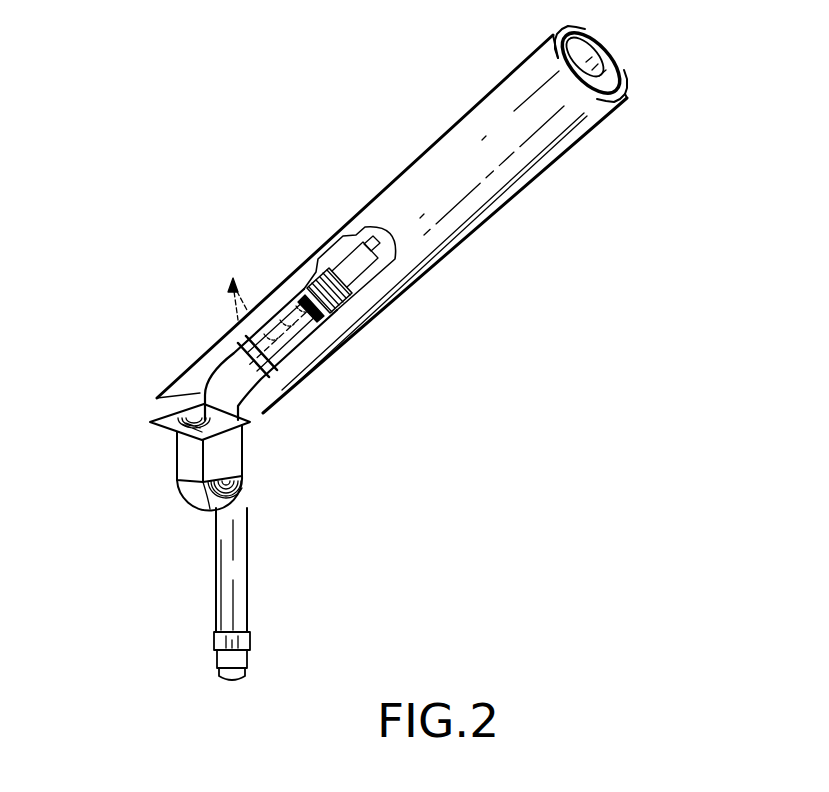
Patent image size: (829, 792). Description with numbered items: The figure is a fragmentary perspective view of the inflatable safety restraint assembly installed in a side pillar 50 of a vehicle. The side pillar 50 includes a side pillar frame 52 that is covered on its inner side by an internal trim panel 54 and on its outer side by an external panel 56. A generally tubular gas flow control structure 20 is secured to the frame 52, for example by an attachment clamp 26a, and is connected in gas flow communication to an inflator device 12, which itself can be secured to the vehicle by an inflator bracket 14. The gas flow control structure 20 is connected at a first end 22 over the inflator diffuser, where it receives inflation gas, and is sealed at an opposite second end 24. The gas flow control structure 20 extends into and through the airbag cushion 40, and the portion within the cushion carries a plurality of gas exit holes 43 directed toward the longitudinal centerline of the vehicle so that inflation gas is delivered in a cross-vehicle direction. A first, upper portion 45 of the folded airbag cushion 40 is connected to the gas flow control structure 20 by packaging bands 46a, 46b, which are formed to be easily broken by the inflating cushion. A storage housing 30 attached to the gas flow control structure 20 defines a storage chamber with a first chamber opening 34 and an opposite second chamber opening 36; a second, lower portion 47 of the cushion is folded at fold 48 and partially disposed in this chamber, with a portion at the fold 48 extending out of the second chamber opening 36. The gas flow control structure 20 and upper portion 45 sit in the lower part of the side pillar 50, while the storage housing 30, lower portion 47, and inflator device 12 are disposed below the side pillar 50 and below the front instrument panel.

The inflator device 12 is at (248, 598).
The inflator bracket 14 is at (250, 638).
The gas flow control structure 20 is at (345, 236).
The first end 22 is at (244, 497).
The second end 24 is at (373, 252).
The attachment clamp 26a is at (313, 262).
The storage housing 30 is at (244, 450).
The first chamber opening 34 is at (183, 398).
The second chamber opening 36 is at (244, 476).
The airbag cushion 40 is at (197, 489).
The gas exit holes 43 is at (238, 285).
The upper portion 45 is at (300, 343).
The packaging band 46a is at (318, 323).
The packaging band 46b is at (257, 399).
The lower portion 47 is at (165, 475).
The fold 48 is at (197, 510).
The side pillar 50 is at (430, 148).
The side pillar frame 52 is at (597, 60).
The internal trim panel 54 is at (528, 83).
The external panel 56 is at (630, 66).